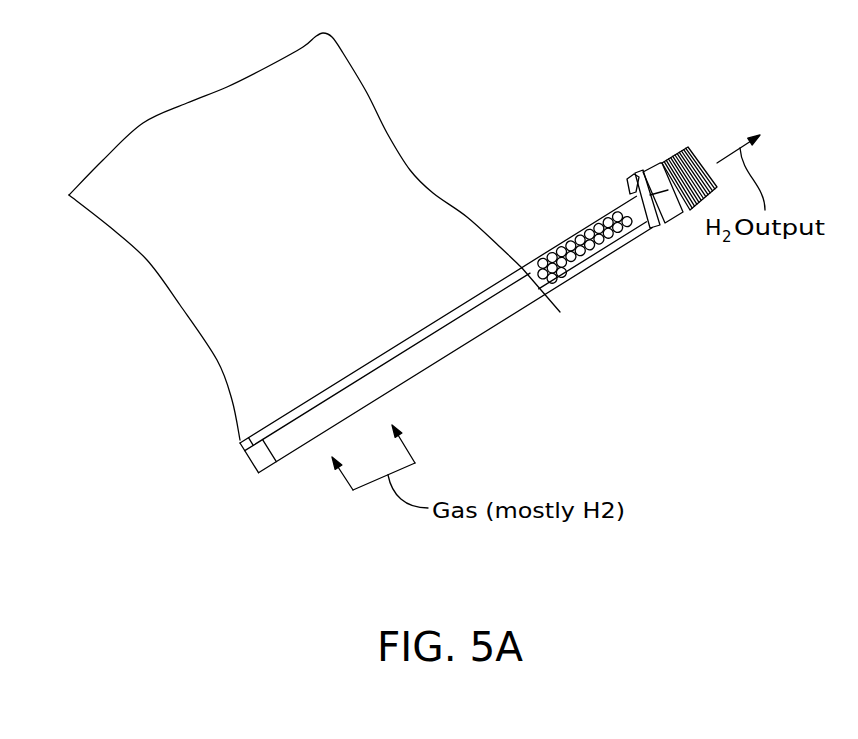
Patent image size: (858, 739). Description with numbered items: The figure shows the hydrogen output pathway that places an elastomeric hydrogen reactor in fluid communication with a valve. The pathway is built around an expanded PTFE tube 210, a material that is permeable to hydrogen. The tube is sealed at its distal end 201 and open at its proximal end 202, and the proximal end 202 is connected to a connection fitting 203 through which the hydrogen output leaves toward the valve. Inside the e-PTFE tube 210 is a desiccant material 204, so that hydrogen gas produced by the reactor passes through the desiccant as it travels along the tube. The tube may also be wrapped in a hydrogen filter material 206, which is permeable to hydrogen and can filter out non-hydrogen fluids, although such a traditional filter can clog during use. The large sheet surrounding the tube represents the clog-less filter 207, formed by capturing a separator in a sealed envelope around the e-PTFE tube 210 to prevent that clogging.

The distal end 201 is at (250, 437).
The proximal end 202 is at (628, 208).
The connection fitting 203 is at (666, 134).
The desiccant material 204 is at (560, 276).
The hydrogen filter material 206 is at (485, 313).
The clog-less filter 207 is at (320, 161).
The e-PTFE tube 210 is at (535, 262).